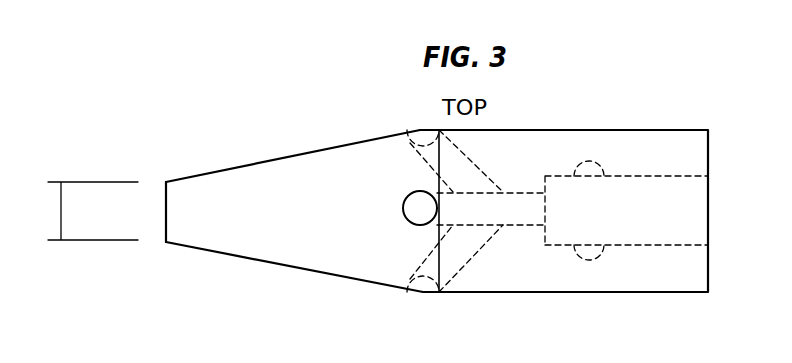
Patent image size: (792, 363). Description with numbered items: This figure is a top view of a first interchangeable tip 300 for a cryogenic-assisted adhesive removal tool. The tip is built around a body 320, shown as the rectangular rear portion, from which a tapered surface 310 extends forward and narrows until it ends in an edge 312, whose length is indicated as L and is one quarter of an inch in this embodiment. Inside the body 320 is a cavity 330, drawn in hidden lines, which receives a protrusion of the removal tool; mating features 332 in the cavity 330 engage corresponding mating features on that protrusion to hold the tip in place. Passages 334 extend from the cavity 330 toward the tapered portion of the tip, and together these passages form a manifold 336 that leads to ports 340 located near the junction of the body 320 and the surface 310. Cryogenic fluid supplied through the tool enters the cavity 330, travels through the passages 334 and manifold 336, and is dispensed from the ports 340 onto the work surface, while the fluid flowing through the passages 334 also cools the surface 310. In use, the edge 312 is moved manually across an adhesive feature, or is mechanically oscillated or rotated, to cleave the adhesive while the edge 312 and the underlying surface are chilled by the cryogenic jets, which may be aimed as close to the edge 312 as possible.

The first interchangeable tip 300 is at (170, 148).
The surface 310 is at (237, 258).
The edge 312 is at (166, 209).
The body 320 is at (548, 293).
The cavity 330 is at (687, 203).
The mating features 332 is at (598, 167).
The passages 334 is at (483, 168).
The manifold 336 is at (483, 253).
The ports 340 is at (420, 282).